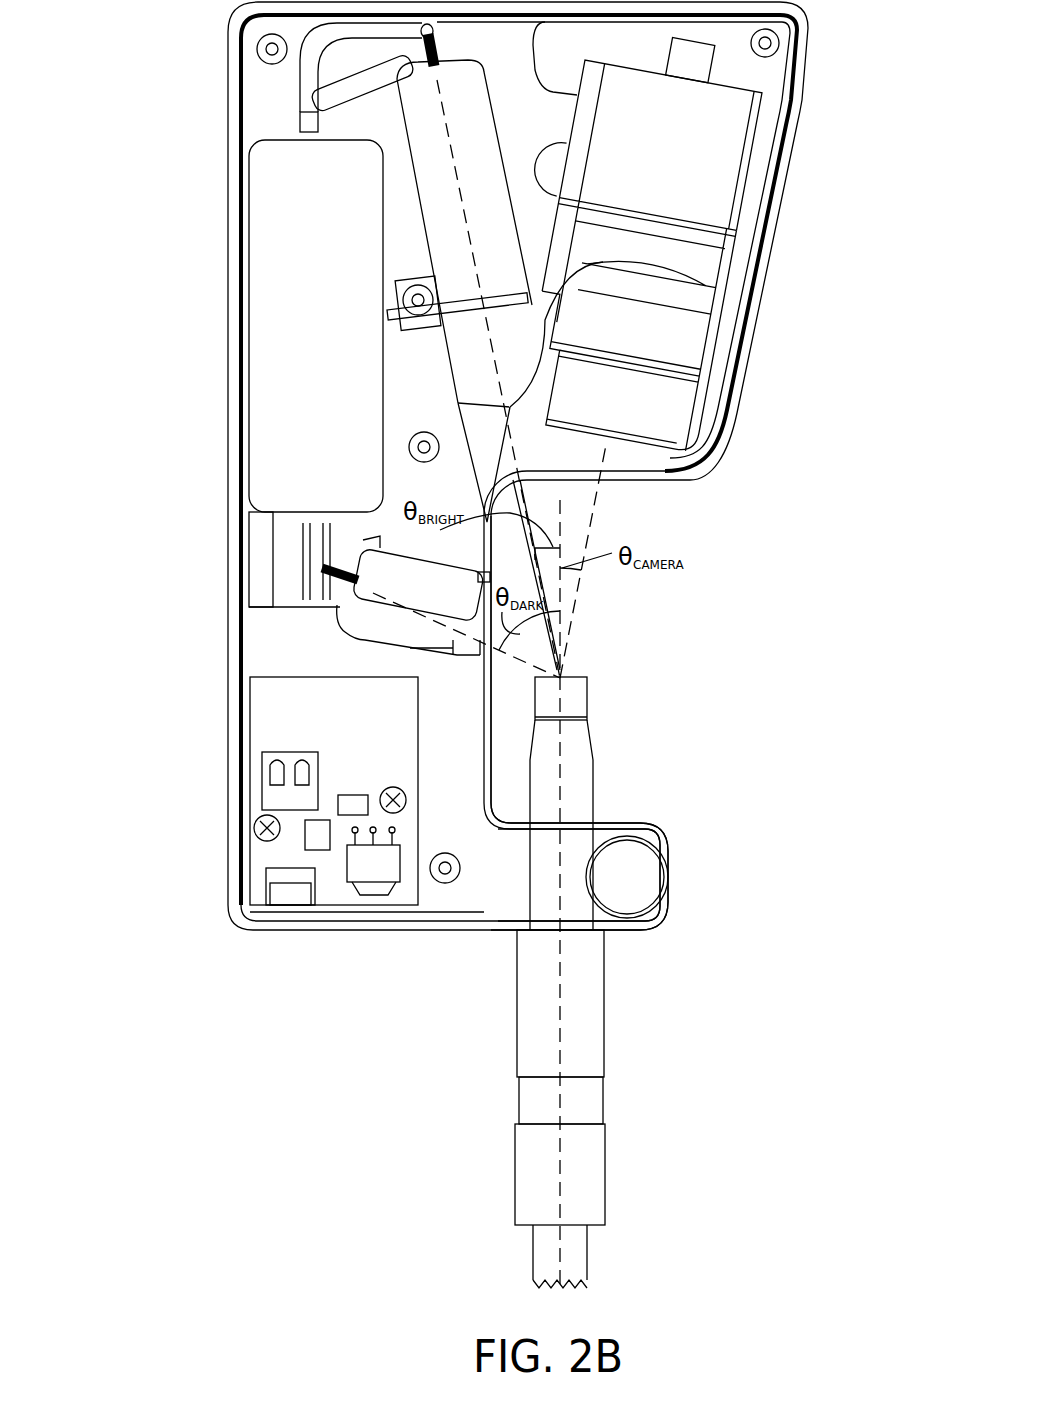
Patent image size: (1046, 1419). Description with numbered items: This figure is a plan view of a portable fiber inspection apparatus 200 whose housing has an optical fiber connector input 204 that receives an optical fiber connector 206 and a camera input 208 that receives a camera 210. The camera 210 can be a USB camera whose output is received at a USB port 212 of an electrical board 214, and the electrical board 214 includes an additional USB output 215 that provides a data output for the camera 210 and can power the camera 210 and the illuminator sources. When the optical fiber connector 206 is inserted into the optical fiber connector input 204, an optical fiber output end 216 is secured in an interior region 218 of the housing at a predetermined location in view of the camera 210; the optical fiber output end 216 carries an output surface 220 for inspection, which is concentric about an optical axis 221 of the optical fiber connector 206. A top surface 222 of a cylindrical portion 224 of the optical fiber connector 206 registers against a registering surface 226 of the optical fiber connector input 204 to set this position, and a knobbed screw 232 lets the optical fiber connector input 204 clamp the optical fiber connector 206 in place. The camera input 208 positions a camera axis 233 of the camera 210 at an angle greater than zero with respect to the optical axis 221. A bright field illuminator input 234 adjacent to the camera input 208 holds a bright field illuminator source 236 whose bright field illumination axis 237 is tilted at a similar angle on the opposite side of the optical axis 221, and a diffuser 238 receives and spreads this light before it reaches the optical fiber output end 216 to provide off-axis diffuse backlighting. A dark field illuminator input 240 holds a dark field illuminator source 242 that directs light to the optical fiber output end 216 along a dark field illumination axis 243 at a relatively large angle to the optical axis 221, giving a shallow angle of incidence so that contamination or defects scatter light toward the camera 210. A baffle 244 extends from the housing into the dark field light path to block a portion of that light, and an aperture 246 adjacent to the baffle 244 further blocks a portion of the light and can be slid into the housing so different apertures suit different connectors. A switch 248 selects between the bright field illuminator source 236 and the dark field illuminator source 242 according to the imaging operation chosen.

The portable fiber inspection apparatus 200 is at (122, 268).
The optical fiber connector input 204 is at (582, 912).
The optical fiber connector 206 is at (513, 1152).
The camera input 208 is at (725, 352).
The camera 210 is at (708, 180).
The USB port 212 is at (265, 782).
The electrical board 214 is at (265, 858).
The additional USB output 215 is at (287, 900).
The optical fiber output end 216 is at (632, 742).
The interior region 218 is at (593, 613).
The output surface 220 is at (580, 667).
The optical axis 221 is at (563, 1059).
The top surface 222 is at (527, 918).
The cylindrical portion 224 is at (590, 1037).
The registering surface 226 is at (535, 915).
The knobbed screw 232 is at (620, 877).
The camera axis 233 is at (593, 514).
The bright field illuminator input 234 is at (423, 133).
The bright field illuminator source 236 is at (437, 78).
The bright field illumination axis 237 is at (460, 182).
The diffuser 238 is at (502, 288).
The dark field illuminator input 240 is at (378, 640).
The dark field illuminator source 242 is at (361, 548).
The dark field illumination axis 243 is at (407, 610).
The baffle 244 is at (460, 650).
The aperture 246 is at (490, 652).
The switch 248 is at (373, 883).